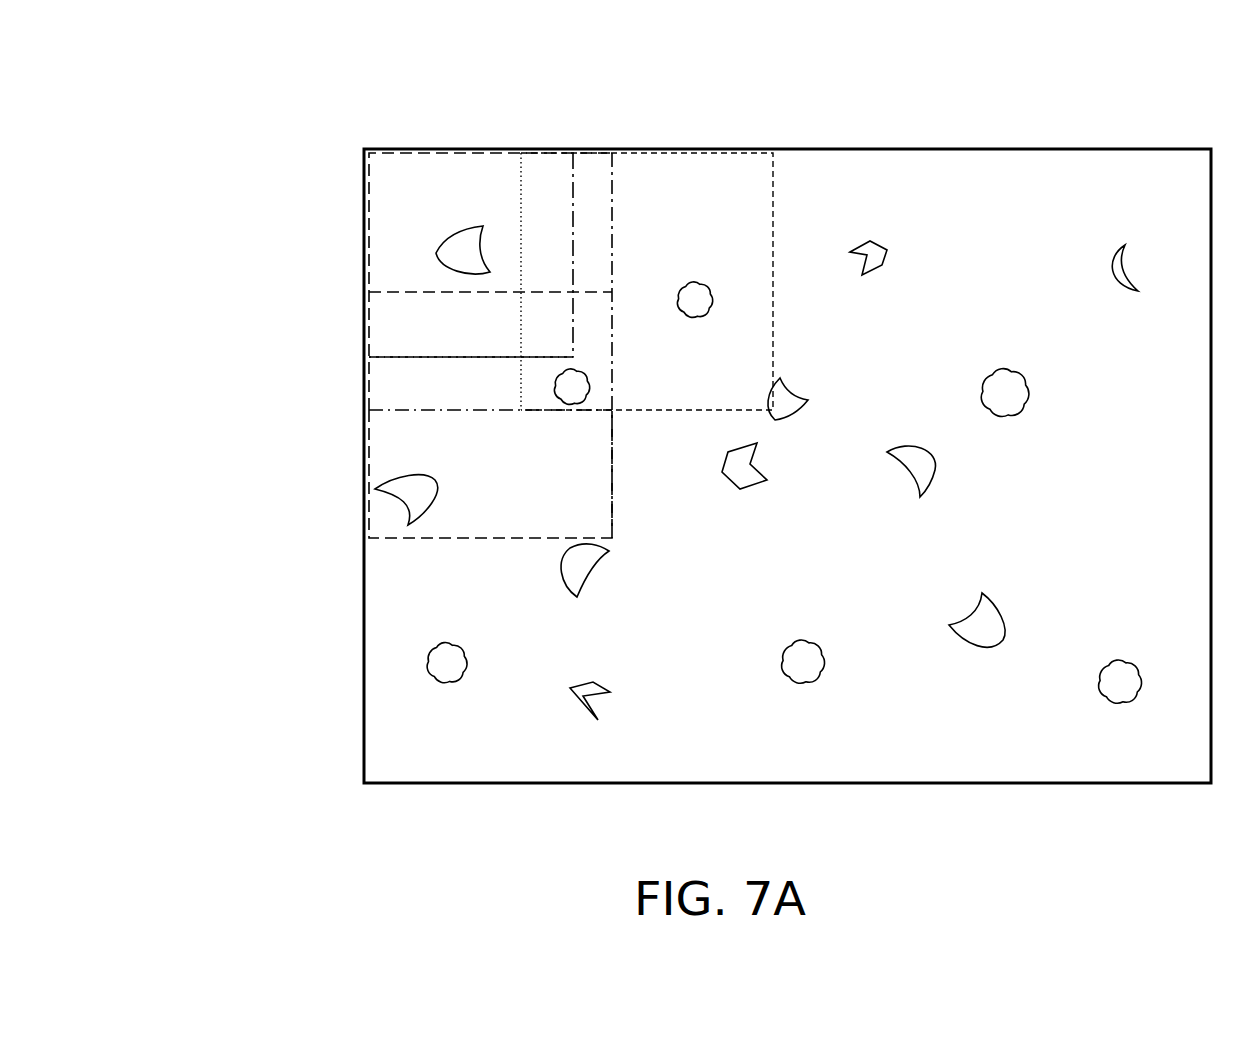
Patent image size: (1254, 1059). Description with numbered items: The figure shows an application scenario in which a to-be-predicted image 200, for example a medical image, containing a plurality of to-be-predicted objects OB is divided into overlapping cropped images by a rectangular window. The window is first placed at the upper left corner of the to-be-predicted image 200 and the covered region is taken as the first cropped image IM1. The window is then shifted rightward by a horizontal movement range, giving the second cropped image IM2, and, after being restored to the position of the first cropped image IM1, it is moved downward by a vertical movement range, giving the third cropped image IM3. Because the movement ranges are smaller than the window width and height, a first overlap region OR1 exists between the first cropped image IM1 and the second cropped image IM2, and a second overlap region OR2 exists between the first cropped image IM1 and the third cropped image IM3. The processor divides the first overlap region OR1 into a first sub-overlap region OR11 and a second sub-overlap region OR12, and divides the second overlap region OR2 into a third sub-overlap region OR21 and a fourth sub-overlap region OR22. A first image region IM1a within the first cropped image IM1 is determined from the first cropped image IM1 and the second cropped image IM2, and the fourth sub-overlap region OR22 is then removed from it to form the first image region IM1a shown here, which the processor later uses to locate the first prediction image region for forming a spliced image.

The to-be-predicted image 200 is at (363, 749).
The first cropped image IM1 is at (375, 152).
The first image region IM1a is at (573, 207).
The second cropped image IM2 is at (727, 152).
The third cropped image IM3 is at (365, 458).
The first overlap region OR1 is at (653, 53).
The first sub-overlap region OR11 is at (545, 165).
The second sub-overlap region OR12 is at (594, 163).
The second overlap region OR2 is at (253, 302).
The third sub-overlap region OR21 is at (378, 328).
The fourth sub-overlap region OR22 is at (378, 383).
The to-be-predicted objects OB is at (560, 572).